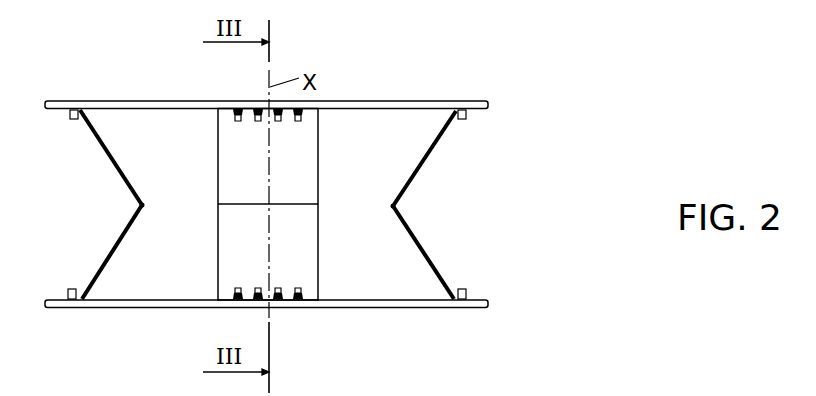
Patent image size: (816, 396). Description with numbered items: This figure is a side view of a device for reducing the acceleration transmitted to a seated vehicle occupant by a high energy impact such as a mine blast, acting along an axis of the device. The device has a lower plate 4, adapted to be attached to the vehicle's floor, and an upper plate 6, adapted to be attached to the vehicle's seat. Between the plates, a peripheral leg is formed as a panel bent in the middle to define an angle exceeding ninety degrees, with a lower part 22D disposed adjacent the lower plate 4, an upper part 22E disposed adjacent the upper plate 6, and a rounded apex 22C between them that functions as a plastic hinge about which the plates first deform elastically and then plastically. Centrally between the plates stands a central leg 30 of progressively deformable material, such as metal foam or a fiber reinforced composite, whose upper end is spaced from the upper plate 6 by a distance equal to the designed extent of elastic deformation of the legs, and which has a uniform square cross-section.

The lower plate 4 is at (172, 308).
The upper plate 6 is at (381, 108).
The central leg 30 is at (256, 245).
The apex 22C is at (140, 205).
The lower part 22D is at (103, 257).
The upper part 22E is at (110, 158).